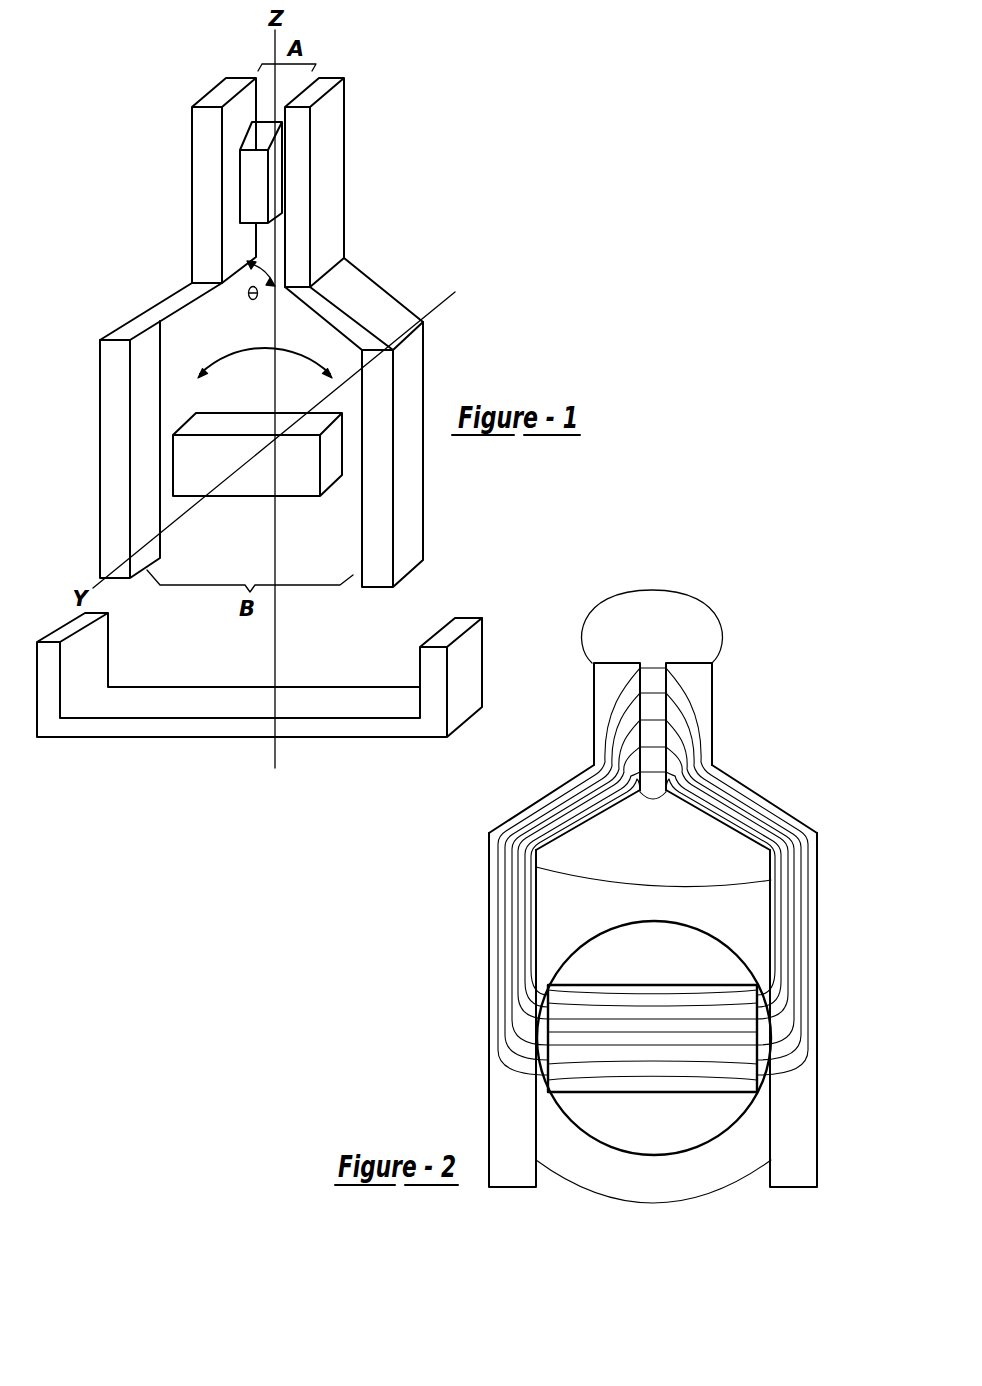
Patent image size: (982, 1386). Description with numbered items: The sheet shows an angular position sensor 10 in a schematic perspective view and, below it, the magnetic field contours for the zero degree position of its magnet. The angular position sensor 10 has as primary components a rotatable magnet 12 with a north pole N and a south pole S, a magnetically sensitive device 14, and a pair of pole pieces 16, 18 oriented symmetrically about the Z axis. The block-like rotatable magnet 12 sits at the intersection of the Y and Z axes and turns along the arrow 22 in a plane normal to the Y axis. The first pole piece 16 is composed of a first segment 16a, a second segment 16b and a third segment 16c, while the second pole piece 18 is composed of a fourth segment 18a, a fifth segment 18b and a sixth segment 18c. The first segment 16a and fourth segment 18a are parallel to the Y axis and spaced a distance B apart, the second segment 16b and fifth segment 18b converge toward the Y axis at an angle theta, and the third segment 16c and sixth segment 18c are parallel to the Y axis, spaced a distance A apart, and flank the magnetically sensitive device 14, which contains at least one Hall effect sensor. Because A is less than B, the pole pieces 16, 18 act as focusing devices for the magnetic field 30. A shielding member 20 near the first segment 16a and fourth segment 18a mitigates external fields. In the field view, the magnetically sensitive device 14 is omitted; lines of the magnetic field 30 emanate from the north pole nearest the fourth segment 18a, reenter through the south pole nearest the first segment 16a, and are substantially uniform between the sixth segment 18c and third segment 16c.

In FIG. 1, the angular position sensor 10 is at (477, 233).
In FIG. 1, the rotatable magnet 12 is at (246, 496).
In FIG. 2, the rotatable magnet 12 is at (655, 1092).
In FIG. 1, the magnetically sensitive device 14 is at (250, 170).
In FIG. 1, the first pole piece 16 is at (427, 347).
In FIG. 2, the first pole piece 16 is at (818, 922).
In FIG. 1, the first segment 16a is at (422, 470).
In FIG. 1, the second segment 16b is at (377, 285).
In FIG. 2, the second segment 16b is at (747, 788).
In FIG. 1, the third segment 16c is at (343, 165).
In FIG. 2, the third segment 16c is at (712, 727).
In FIG. 1, the second pole piece 18 is at (100, 340).
In FIG. 2, the second pole piece 18 is at (489, 872).
In FIG. 1, the fourth segment 18a is at (100, 437).
In FIG. 2, the fourth segment 18a is at (489, 993).
In FIG. 1, the fifth segment 18b is at (160, 305).
In FIG. 2, the fifth segment 18b is at (547, 797).
In FIG. 1, the sixth segment 18c is at (192, 225).
In FIG. 2, the sixth segment 18c is at (593, 725).
In FIG. 1, the shielding member 20 is at (150, 737).
In FIG. 1, the arrow 22 is at (255, 349).
In FIG. 2, the magnetic field 30 is at (650, 588).